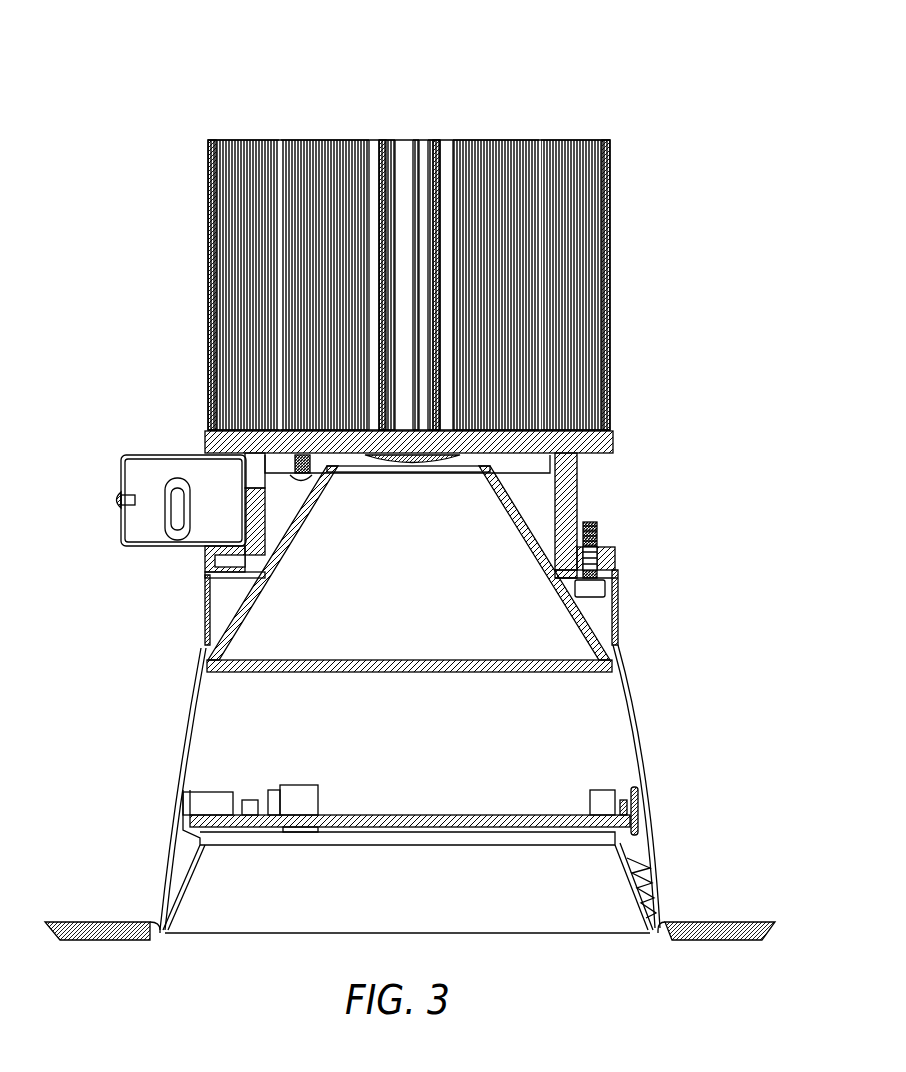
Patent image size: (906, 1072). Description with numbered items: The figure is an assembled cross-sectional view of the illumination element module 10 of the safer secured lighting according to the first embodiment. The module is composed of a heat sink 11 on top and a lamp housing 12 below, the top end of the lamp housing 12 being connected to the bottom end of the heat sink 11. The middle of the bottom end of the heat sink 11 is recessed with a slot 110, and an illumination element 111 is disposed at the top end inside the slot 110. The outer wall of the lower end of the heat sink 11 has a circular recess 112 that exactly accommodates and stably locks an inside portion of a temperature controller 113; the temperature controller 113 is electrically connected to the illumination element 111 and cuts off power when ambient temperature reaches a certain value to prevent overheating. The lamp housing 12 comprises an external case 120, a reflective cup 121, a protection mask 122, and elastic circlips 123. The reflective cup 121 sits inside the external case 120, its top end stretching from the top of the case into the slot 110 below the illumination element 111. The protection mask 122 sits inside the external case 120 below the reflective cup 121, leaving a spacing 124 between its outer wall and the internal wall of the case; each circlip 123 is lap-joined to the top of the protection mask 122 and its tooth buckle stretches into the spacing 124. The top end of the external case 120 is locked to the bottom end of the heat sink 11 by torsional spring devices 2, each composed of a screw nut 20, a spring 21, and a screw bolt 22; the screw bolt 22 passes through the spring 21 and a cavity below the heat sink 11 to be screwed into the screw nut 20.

The illumination element module 10 is at (590, 118).
The heat sink 11 is at (607, 268).
The illumination element 111 is at (607, 378).
The circular recess 112 is at (590, 495).
The slot 110 is at (540, 497).
The temperature controller 113 is at (143, 455).
The torsional spring device 2 is at (700, 538).
The screw nut 20 is at (600, 540).
The spring 21 is at (612, 558).
The screw bolt 22 is at (612, 582).
The lamp housing 12 is at (665, 632).
The reflective cup 121 is at (573, 607).
The external case 120 is at (645, 745).
The circlip 123 is at (643, 855).
The protection mask 122 is at (630, 887).
The spacing 124 is at (633, 867).